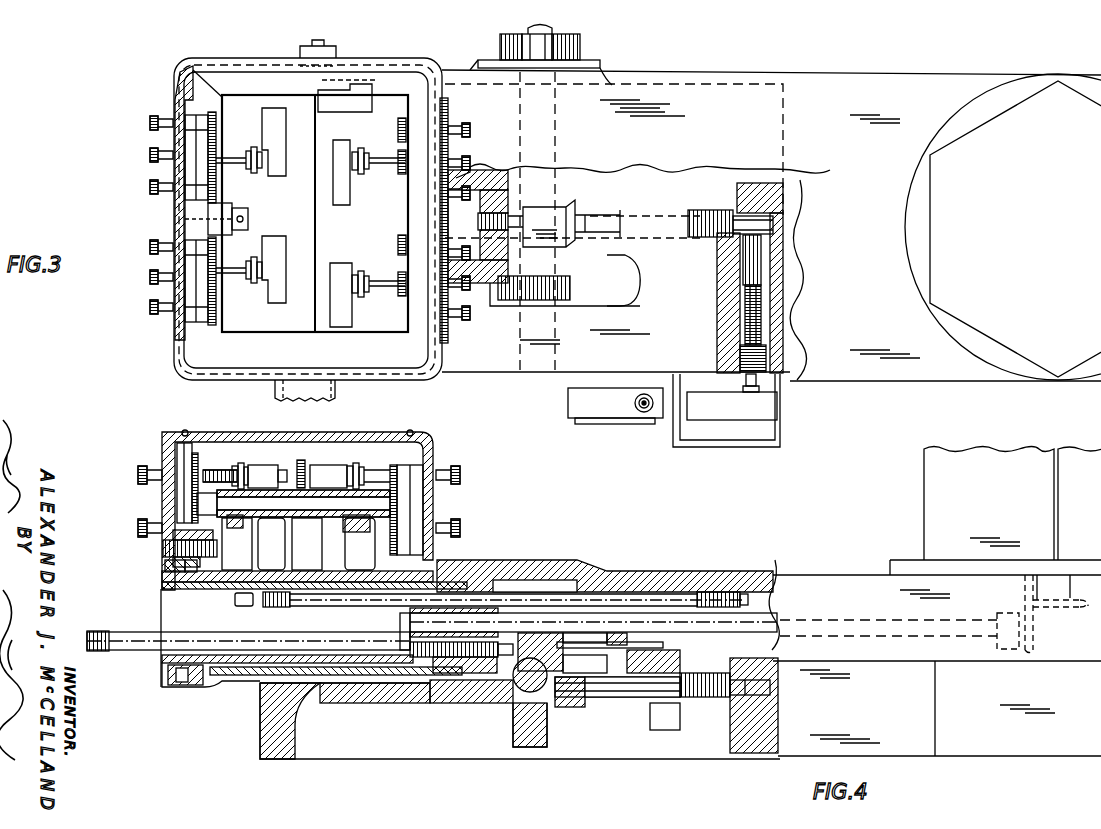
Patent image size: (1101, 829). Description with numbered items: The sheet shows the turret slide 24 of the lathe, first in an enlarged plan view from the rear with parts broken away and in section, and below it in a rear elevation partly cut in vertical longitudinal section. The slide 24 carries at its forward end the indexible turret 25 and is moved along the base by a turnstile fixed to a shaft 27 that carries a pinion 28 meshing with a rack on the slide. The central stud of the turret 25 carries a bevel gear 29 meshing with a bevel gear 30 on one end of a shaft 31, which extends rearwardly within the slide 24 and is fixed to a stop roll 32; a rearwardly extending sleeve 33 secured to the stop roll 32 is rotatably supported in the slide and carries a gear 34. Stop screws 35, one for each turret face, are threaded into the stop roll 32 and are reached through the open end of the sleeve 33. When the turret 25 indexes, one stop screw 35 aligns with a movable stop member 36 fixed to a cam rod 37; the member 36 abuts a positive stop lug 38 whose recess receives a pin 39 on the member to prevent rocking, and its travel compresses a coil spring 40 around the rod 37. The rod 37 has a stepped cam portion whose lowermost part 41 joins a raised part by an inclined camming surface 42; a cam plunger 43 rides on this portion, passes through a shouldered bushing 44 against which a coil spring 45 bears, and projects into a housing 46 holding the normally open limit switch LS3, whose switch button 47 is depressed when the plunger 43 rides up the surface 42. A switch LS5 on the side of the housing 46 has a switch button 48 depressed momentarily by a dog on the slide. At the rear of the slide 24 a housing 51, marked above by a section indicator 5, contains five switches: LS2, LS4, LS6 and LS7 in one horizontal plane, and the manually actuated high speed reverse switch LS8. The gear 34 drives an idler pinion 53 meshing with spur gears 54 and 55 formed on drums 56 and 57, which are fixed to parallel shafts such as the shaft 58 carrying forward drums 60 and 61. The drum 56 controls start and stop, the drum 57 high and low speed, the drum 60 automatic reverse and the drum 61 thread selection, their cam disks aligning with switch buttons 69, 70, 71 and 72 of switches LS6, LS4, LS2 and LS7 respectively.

In FIG. 3, the section line 5- 5 is at (348, 36).
In FIG. 4, the turret slide 24 is at (836, 576).
In FIG. 3, the indexible turret 25 is at (1018, 213).
In FIG. 4, the indexible turret 25 is at (1000, 521).
In FIG. 3, the shaft 27 is at (562, 43).
In FIG. 4, the shaft 27 is at (517, 690).
In FIG. 3, the pinion 28 is at (570, 286).
In FIG. 4, the bevel gear 29 is at (1079, 612).
In FIG. 4, the bevel gear 30 is at (1035, 647).
In FIG. 4, the shaft 31 is at (863, 622).
In FIG. 4, the stop roll 32 is at (520, 560).
In FIG. 4, the sleeve 33 is at (227, 594).
In FIG. 4, the gear 34 is at (190, 682).
In FIG. 4, the stop screws 35 is at (372, 629).
In FIG. 3, the movable stop member 36 is at (571, 223).
In FIG. 4, the movable stop member 36 is at (575, 686).
In FIG. 3, the cam rod 37 is at (621, 205).
In FIG. 4, the cam rod 37 is at (605, 697).
In FIG. 4, the positive stop lug 38 is at (664, 644).
In FIG. 4, the pin 39 is at (572, 644).
In FIG. 3, the coil spring 40 is at (712, 211).
In FIG. 4, the coil spring 40 is at (705, 697).
In FIG. 3, the lowermost part 41 is at (790, 196).
In FIG. 3, the inclined camming surface 42 is at (740, 238).
In FIG. 3, the cam plunger 43 is at (762, 254).
In FIG. 3, the shouldered bushing 44 is at (767, 364).
In FIG. 3, the coil spring 45 is at (765, 312).
In FIG. 3, the housing 46 is at (739, 447).
In FIG. 3, the switch button 47 is at (743, 393).
In FIG. 3, the switch button 48 is at (645, 414).
In FIG. 4, the housing 51 is at (430, 438).
In FIG. 3, the idler pinion 53 is at (230, 205).
In FIG. 4, the idler pinion 53 is at (165, 574).
In FIG. 3, the spur gear 54 is at (213, 110).
In FIG. 4, the spur gear 54 is at (200, 470).
In FIG. 3, the spur gear 55 is at (222, 332).
In FIG. 3, the drum 56 is at (166, 155).
In FIG. 4, the drum 56 is at (162, 469).
In FIG. 3, the drum 57 is at (165, 276).
In FIG. 4, the shaft 58 is at (306, 515).
In FIG. 3, the drum 60 is at (446, 118).
In FIG. 4, the drum 60 is at (435, 466).
In FIG. 3, the drum 61 is at (448, 338).
In FIG. 3, the switch button 69 is at (243, 153).
In FIG. 3, the switch button 70 is at (243, 275).
In FIG. 3, the switch button 71 is at (370, 150).
In FIG. 3, the switch button 72 is at (370, 280).
In FIG. 3, the switch LS2 is at (343, 204).
In FIG. 3, the limit switch LS3 is at (780, 412).
In FIG. 3, the switch LS4 is at (266, 303).
In FIG. 3, the switch LS5 is at (596, 418).
In FIG. 3, the switch LS6 is at (268, 176).
In FIG. 3, the switch LS7 is at (340, 266).
In FIG. 3, the high speed reverse switch LS8 is at (338, 112).